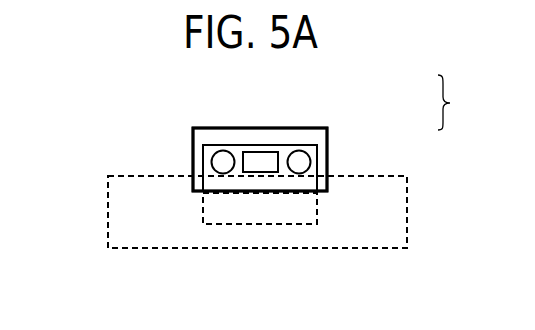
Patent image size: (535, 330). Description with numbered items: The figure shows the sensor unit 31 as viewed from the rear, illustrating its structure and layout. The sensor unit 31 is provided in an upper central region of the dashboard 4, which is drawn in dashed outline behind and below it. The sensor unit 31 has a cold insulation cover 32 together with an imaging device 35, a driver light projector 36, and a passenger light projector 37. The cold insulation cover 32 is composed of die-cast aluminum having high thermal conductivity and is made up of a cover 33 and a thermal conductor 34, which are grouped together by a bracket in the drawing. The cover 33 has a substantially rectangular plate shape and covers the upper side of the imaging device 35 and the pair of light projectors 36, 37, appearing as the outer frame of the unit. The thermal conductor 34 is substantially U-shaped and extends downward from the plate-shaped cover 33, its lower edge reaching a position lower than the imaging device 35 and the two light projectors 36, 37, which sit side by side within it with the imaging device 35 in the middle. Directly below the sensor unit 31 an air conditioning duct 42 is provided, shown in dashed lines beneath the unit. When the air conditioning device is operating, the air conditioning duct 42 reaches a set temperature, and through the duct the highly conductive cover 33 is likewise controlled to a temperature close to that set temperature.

The dashboard 4 is at (170, 258).
The sensor unit 31 is at (172, 138).
The cold insulation cover 32 is at (460, 102).
The cover 33 is at (273, 138).
The thermal conductor 34 is at (328, 160).
The imaging device 35 is at (259, 163).
The driver light projector 36 is at (222, 165).
The passenger light projector 37 is at (298, 165).
The air conditioning duct 42 is at (203, 208).